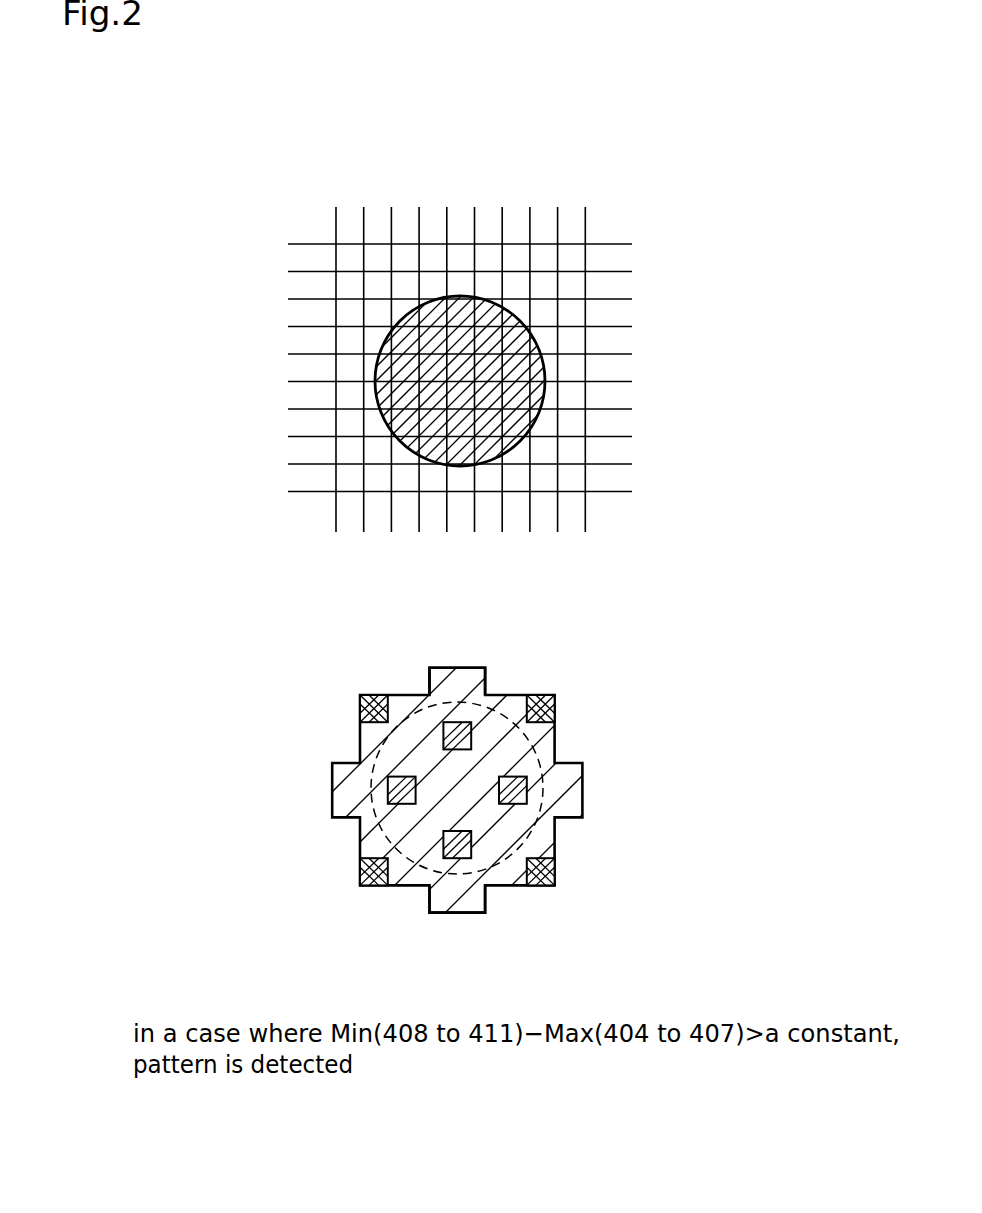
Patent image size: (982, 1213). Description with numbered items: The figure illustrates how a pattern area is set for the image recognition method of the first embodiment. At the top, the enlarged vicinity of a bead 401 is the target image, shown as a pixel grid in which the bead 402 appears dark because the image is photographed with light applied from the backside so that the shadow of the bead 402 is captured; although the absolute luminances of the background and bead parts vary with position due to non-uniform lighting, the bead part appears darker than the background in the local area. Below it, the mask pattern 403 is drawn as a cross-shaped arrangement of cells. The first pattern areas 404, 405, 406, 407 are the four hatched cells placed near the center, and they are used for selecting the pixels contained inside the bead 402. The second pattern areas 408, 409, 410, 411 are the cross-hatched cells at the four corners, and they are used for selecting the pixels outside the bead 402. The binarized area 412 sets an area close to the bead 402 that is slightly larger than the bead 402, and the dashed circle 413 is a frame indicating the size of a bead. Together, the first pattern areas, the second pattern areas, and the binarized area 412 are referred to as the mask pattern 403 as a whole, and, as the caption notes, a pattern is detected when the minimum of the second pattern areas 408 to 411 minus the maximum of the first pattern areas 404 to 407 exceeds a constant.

The enlarged vicinity of a bead 401 is at (645, 208).
The bead 402 is at (459, 311).
The mask pattern 403 is at (645, 664).
The first pattern area 404 is at (462, 722).
The first pattern area 405 is at (387, 777).
The first pattern area 406 is at (527, 803).
The first pattern area 407 is at (444, 859).
The second pattern area 408 is at (362, 702).
The second pattern area 409 is at (545, 695).
The second pattern area 410 is at (367, 885).
The second pattern area 411 is at (543, 885).
The binarized area 412 is at (450, 667).
The circle (frame indicating a size of a bead) 413 is at (503, 884).